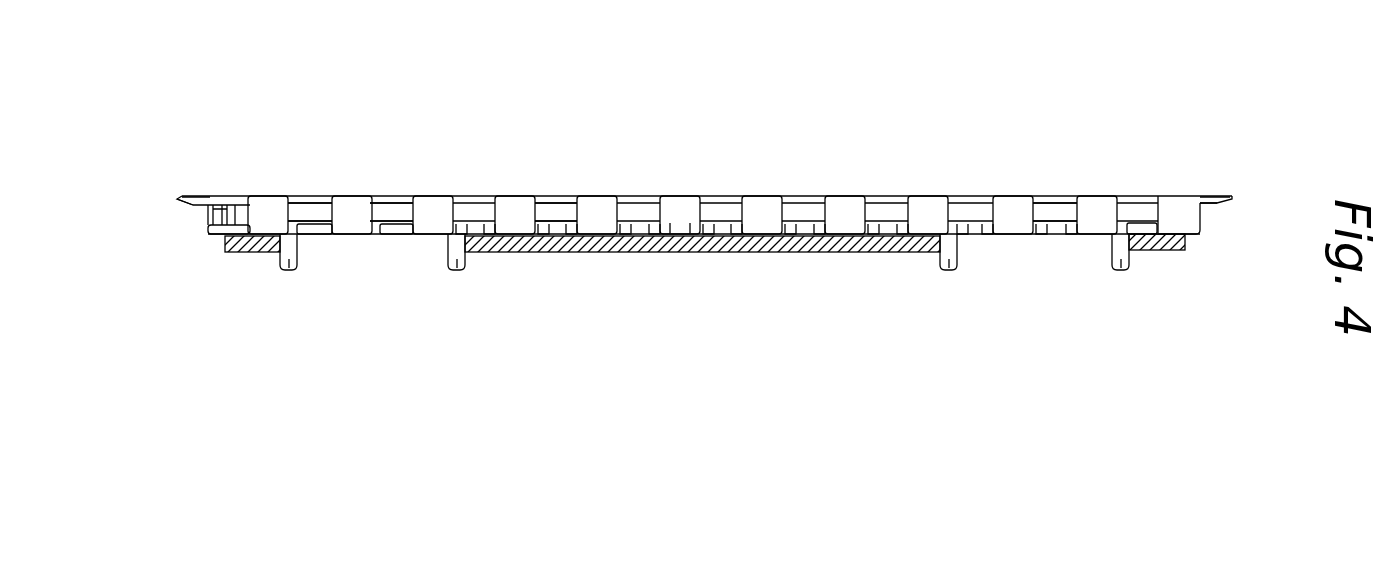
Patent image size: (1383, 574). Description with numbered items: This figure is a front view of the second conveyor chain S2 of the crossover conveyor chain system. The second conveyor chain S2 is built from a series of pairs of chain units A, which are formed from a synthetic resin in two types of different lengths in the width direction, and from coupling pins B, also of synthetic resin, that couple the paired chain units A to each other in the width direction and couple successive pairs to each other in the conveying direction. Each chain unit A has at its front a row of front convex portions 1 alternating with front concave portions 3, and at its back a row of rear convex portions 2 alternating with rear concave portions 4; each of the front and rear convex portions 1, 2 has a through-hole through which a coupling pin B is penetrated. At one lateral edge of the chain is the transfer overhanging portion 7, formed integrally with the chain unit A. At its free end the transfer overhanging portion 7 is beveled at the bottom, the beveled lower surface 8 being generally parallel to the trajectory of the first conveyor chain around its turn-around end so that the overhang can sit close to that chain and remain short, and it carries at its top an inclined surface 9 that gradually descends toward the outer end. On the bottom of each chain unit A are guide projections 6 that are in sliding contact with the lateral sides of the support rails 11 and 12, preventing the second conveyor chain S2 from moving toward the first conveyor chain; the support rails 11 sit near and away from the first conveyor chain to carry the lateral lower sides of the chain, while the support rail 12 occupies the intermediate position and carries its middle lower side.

The front convex portion 1 is at (927, 210).
The rear convex portion 2 is at (270, 192).
The front concave portion 3 is at (1157, 197).
The rear concave portion 4 is at (320, 192).
The guide projection 6 is at (288, 264).
The transfer overhanging portion 7 is at (193, 194).
The beveled lower surface 8 is at (180, 204).
The inclined surface 9 is at (178, 193).
The support rail 11 is at (253, 244).
The support rail 12 is at (573, 250).
The chain unit A is at (543, 192).
The coupling pin B is at (400, 192).
The second conveyor chain S2 is at (825, 193).